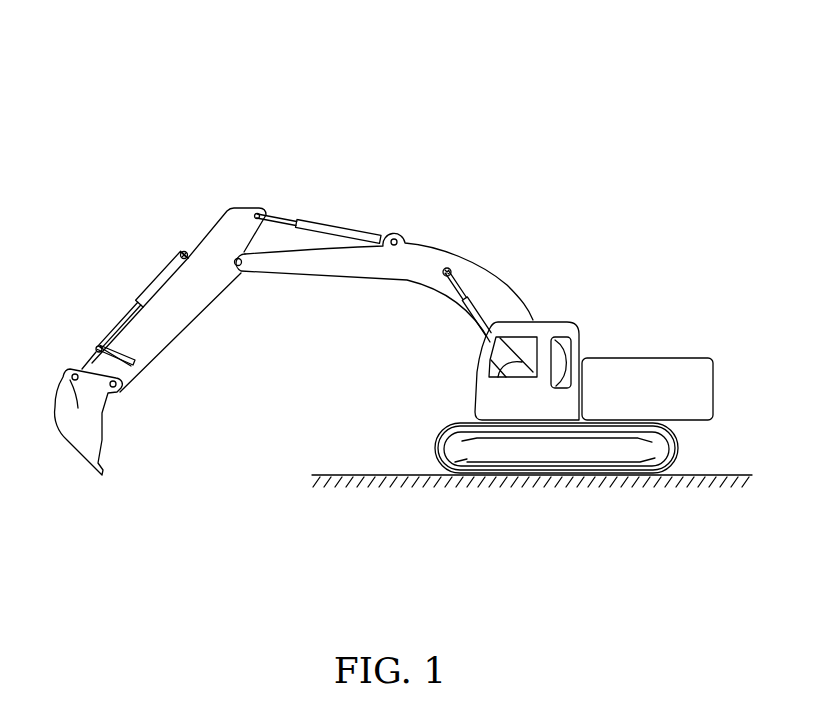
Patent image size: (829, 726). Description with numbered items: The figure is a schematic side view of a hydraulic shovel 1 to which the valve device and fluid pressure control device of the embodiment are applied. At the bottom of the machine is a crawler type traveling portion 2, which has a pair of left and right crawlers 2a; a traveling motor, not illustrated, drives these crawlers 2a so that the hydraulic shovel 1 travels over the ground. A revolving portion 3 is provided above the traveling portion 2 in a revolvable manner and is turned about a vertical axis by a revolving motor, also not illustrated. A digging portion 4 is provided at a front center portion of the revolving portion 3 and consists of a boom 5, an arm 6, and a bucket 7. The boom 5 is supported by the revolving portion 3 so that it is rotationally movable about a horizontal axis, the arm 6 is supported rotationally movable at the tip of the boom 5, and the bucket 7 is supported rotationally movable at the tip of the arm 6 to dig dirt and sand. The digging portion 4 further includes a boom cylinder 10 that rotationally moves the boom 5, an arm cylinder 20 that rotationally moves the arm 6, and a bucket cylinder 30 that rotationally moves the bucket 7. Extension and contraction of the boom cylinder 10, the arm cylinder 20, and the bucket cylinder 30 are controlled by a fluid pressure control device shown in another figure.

The hydraulic shovel 1 is at (497, 128).
The traveling portion 2 is at (677, 462).
The crawlers 2a is at (678, 455).
The revolving portion 3 is at (600, 385).
The digging portion 4 is at (277, 337).
The boom 5 is at (413, 260).
The arm 6 is at (222, 240).
The bucket 7 is at (80, 410).
The boom cylinder 10 is at (478, 327).
The arm cylinder 20 is at (327, 230).
The bucket cylinder 30 is at (157, 290).